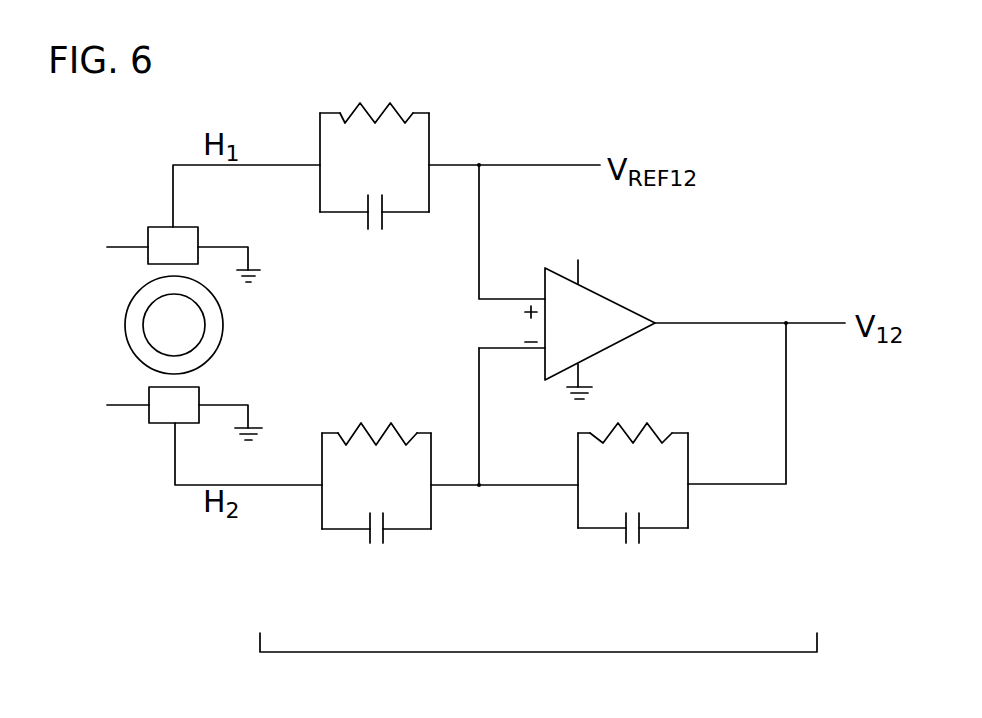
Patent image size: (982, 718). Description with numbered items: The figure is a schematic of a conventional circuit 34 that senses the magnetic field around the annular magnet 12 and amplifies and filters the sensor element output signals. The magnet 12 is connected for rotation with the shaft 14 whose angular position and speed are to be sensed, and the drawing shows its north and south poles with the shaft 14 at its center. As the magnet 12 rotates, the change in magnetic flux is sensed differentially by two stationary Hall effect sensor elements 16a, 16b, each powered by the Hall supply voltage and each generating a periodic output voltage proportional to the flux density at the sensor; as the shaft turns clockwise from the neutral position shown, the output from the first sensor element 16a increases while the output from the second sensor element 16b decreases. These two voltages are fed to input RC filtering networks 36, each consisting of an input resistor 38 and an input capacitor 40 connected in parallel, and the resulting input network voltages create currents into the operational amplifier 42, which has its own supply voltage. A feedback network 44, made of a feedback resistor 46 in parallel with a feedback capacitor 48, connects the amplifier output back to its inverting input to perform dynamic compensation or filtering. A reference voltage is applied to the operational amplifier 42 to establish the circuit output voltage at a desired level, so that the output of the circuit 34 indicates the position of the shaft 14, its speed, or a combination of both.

The magnet 12 is at (137, 294).
The shaft 14 is at (148, 348).
The magnetic field sensor element H1 16a is at (188, 227).
The magnetic field sensor element H2 16b is at (162, 423).
The circuit 34 is at (538, 666).
The input RC filtering network 36 is at (310, 127).
The resistor 38 is at (393, 103).
The capacitor 40 is at (385, 221).
The operational amplifier 42 is at (608, 295).
The feedback network 44 is at (568, 512).
The resistor 46 is at (653, 423).
The capacitor 48 is at (643, 538).